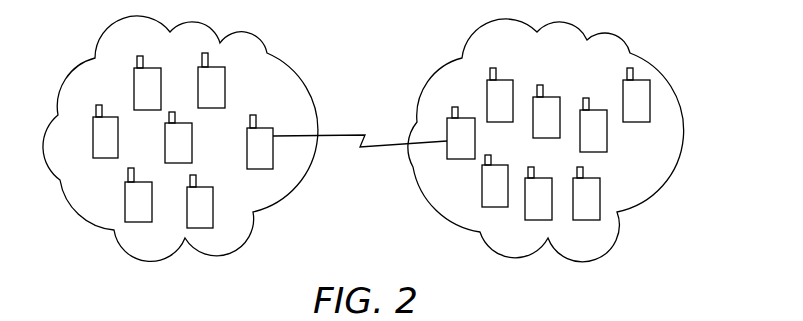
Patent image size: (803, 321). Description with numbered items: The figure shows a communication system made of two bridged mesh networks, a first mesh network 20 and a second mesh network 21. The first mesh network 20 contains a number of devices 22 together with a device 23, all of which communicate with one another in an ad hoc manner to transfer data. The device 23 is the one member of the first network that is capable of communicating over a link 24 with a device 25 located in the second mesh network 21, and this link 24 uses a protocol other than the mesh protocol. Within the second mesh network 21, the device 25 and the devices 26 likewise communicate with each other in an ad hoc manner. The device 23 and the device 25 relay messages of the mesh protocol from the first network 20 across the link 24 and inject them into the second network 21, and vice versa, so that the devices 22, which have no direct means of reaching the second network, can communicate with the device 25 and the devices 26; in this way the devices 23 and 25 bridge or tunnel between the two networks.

The first mesh network 20 is at (165, 260).
The second mesh network 21 is at (578, 262).
The devices 22 is at (133, 82).
The device 23 is at (268, 123).
The link 24 is at (360, 147).
The device 25 is at (468, 160).
The devices 26 is at (513, 88).